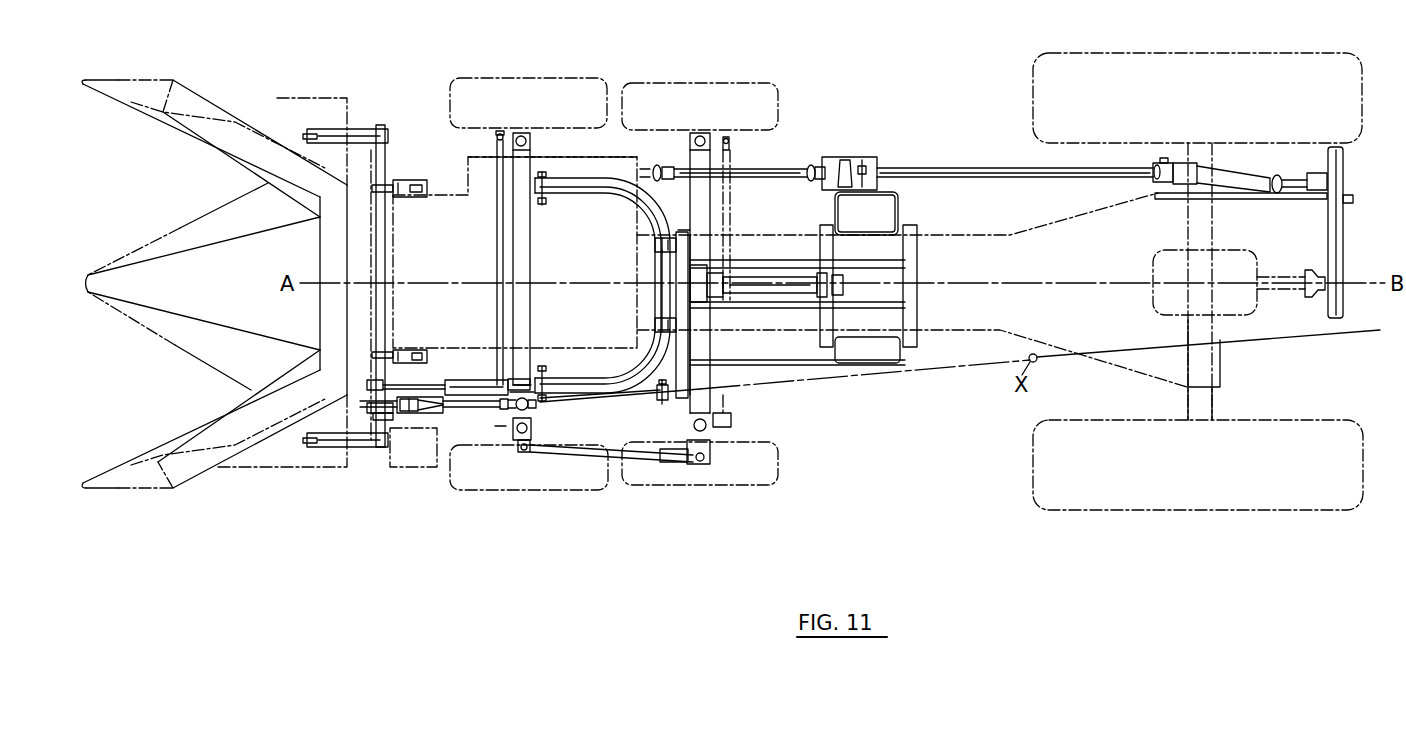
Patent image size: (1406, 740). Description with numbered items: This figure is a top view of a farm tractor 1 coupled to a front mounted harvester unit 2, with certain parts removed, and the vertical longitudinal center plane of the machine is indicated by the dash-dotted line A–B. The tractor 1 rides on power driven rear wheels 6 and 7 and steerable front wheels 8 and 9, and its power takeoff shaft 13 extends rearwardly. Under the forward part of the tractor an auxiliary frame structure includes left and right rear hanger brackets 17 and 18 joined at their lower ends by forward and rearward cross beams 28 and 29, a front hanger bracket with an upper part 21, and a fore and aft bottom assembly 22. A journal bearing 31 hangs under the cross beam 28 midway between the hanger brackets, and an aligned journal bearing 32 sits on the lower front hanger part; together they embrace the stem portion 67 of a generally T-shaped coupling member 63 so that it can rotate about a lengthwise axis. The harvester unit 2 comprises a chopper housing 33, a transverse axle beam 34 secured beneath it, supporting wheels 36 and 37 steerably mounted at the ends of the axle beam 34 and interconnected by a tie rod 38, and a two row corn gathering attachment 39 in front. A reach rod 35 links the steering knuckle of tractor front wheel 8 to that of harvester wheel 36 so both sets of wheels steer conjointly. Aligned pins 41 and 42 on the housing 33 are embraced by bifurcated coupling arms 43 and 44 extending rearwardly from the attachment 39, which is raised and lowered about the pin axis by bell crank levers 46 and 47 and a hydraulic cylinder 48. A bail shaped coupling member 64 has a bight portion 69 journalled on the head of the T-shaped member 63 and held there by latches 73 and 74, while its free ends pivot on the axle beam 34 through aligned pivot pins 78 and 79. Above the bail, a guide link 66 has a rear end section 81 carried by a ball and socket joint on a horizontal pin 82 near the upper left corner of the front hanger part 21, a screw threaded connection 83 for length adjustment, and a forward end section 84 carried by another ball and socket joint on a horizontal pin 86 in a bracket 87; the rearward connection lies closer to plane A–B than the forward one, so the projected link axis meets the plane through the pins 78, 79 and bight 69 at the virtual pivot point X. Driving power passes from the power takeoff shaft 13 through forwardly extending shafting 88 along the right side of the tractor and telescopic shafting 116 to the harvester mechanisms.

The farm tractor 1 is at (916, 150).
The front mounted harvester unit 2 is at (452, 158).
The rear wheel 6 is at (1168, 505).
The rear wheel 7 is at (1142, 57).
The front wheel 8 is at (770, 463).
The front wheel 9 is at (731, 88).
The power takeoff shaft 13 is at (1268, 264).
The left rear hanger bracket 17 is at (863, 342).
The right rear hanger bracket 18 is at (880, 233).
The upper part of front hanger bracket 21 is at (682, 232).
The bottom assembly 22 is at (766, 312).
The forward cross beam 28 is at (834, 322).
The rearward cross beam 29 is at (914, 325).
The journal bearing 31 is at (815, 300).
The journal bearing 32 is at (707, 270).
The chopper housing 33 is at (597, 157).
The transverse axle beam 34 is at (527, 260).
The reach rod 35 is at (638, 460).
The supporting wheel 36 is at (497, 488).
The supporting wheel 37 is at (522, 88).
The tie rod 38 is at (497, 255).
The two row corn gathering attachment 39 is at (266, 269).
The pin 41 is at (414, 350).
The pin 42 is at (406, 197).
The coupling arm 43 is at (390, 350).
The coupling arm 44 is at (388, 183).
The bell crank lever 46 is at (357, 450).
The bell crank lever 47 is at (362, 128).
The hydraulic cylinder 48 is at (460, 382).
The T-shaped coupling member 63 is at (768, 258).
The bail shaped coupling member 64 is at (620, 204).
The guide link 66 is at (603, 402).
The stem portion 67 is at (785, 280).
The bight portion 69 is at (657, 269).
The latch 73 is at (655, 322).
The latch 74 is at (655, 241).
The pivot pin 78 is at (542, 368).
The pivot pin 79 is at (543, 204).
The rear end section of guide link 81 is at (660, 396).
The horizontal pin 82 is at (664, 400).
The screw threaded connection 83 is at (658, 392).
The forward end section of guide link 84 is at (540, 405).
The horizontal pin 86 is at (535, 420).
The bracket 87 is at (527, 412).
The forwardly extending shafting 88 is at (955, 168).
The telescopic shafting 116 is at (775, 171).